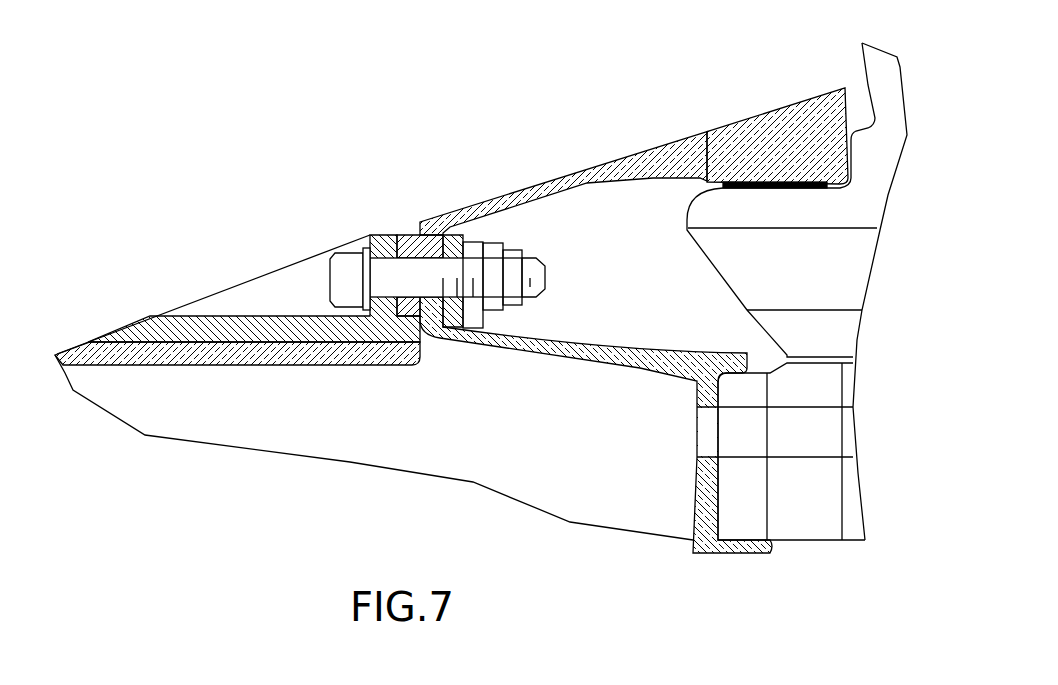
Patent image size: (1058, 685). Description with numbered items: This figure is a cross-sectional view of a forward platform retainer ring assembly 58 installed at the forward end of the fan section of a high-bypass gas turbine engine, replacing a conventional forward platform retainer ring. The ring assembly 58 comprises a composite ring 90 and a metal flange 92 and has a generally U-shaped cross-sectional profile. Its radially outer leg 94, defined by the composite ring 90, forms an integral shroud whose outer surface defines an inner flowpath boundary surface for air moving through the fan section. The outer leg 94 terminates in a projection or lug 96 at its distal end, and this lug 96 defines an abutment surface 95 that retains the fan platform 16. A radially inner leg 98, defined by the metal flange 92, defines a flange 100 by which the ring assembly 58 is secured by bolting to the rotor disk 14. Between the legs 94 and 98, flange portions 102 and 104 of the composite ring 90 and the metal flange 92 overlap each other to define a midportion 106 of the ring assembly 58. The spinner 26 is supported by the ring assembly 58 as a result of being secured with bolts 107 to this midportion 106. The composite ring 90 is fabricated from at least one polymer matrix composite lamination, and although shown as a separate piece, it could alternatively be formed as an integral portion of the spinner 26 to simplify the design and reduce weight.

The rotor disk 14 is at (833, 436).
The fan platform 16 is at (842, 260).
The spinner 26 is at (183, 367).
The forward platform retainer ring assembly 58 is at (468, 316).
The composite ring 90 is at (618, 161).
The metal flange 92 is at (596, 461).
The radially outer leg 94 is at (647, 150).
The abutment surface 95 is at (760, 190).
The lug 96 is at (817, 107).
The radially inner leg 98 is at (596, 461).
The flange 100 is at (700, 548).
The flange portion 102 is at (428, 240).
The flange portion 104 is at (450, 338).
The midportion 106 is at (378, 205).
The bolts 107 is at (340, 278).